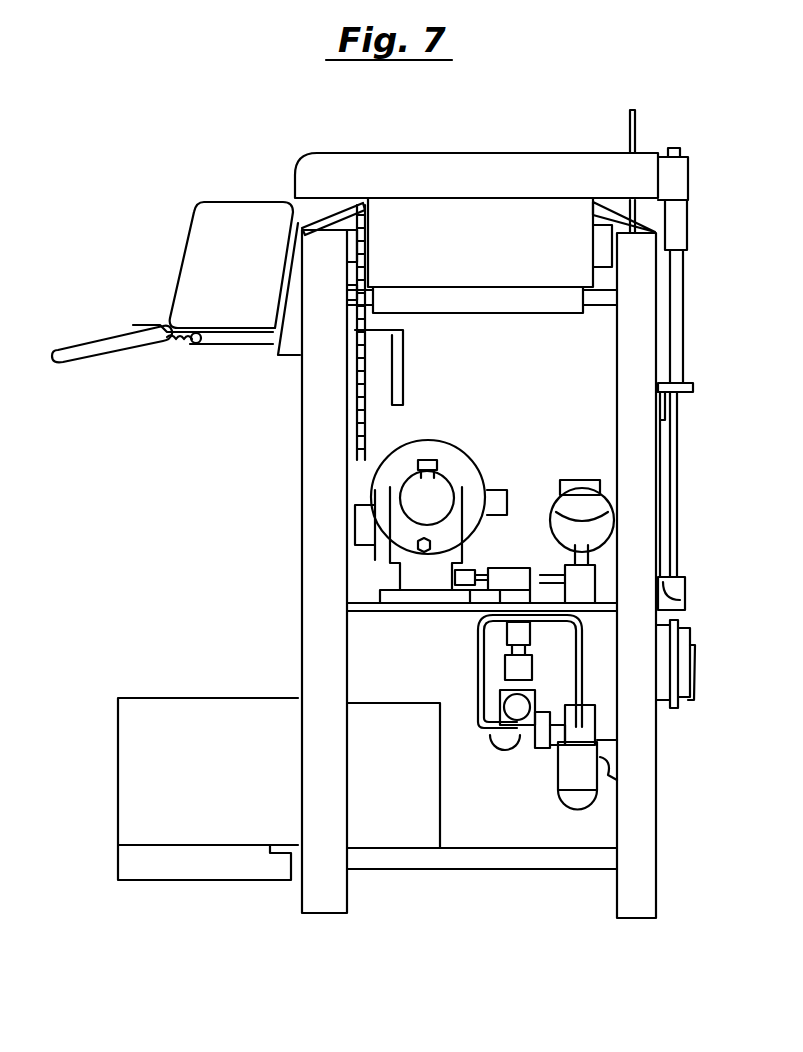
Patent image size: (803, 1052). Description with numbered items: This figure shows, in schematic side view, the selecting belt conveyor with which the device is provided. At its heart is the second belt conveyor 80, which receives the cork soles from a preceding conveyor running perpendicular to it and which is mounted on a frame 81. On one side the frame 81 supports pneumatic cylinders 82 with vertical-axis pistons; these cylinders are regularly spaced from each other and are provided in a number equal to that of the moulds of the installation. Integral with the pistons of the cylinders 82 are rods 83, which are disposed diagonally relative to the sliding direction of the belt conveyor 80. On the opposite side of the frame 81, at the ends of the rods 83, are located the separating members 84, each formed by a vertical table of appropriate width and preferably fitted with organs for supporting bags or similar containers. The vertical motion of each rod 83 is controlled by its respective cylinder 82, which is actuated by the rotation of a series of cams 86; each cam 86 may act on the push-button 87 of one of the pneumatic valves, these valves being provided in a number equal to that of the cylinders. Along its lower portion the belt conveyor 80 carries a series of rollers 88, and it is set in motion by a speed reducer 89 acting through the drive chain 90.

The second belt conveyor 80 is at (463, 225).
The frame 81 is at (640, 300).
The pneumatic cylinder 82 is at (675, 258).
The rod 83 is at (434, 170).
The separating member 84 is at (208, 280).
The cam 86 is at (563, 530).
The push-button 87 is at (575, 560).
The roller 88 is at (505, 298).
The speed reducer 89 is at (435, 490).
The drive chain 90 is at (363, 428).